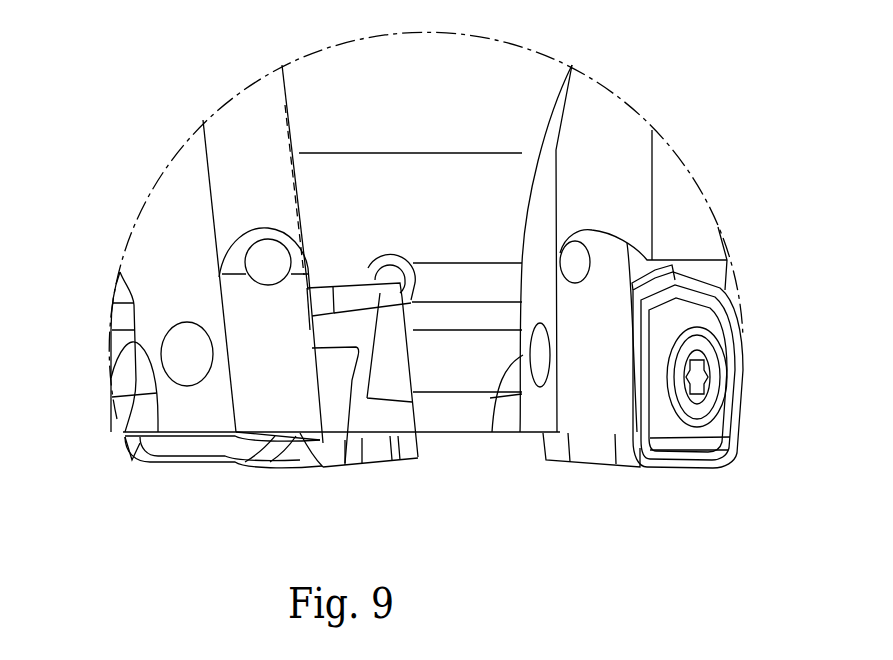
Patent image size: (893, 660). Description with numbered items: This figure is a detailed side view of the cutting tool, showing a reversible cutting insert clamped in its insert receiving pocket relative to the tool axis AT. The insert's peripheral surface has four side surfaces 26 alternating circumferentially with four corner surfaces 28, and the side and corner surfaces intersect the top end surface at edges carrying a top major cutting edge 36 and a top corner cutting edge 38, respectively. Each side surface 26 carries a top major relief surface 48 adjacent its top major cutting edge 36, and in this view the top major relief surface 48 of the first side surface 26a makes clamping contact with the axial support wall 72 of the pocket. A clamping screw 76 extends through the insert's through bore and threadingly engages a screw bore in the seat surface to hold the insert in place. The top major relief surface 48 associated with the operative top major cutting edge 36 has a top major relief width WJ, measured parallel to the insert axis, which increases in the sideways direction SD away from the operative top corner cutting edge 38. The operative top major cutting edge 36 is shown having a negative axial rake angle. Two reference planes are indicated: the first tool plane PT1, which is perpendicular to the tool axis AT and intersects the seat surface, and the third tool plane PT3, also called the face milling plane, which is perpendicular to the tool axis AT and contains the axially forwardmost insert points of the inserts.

The side surface 26 is at (385, 375).
The first side surface 26a is at (340, 282).
The corner surface 28 is at (363, 462).
The top major cutting edge 36 is at (312, 400).
The top corner cutting edge 38 is at (318, 467).
The top major relief surface 48 is at (328, 288).
The axial support wall 72 is at (330, 297).
The clamping screw 76 is at (700, 350).
The tool axis AT is at (482, 5).
The first tool plane PT1 is at (836, 420).
The third tool plane PT3 is at (768, 470).
The sideways direction SD is at (293, 382).
The top major relief width WJ is at (315, 382).